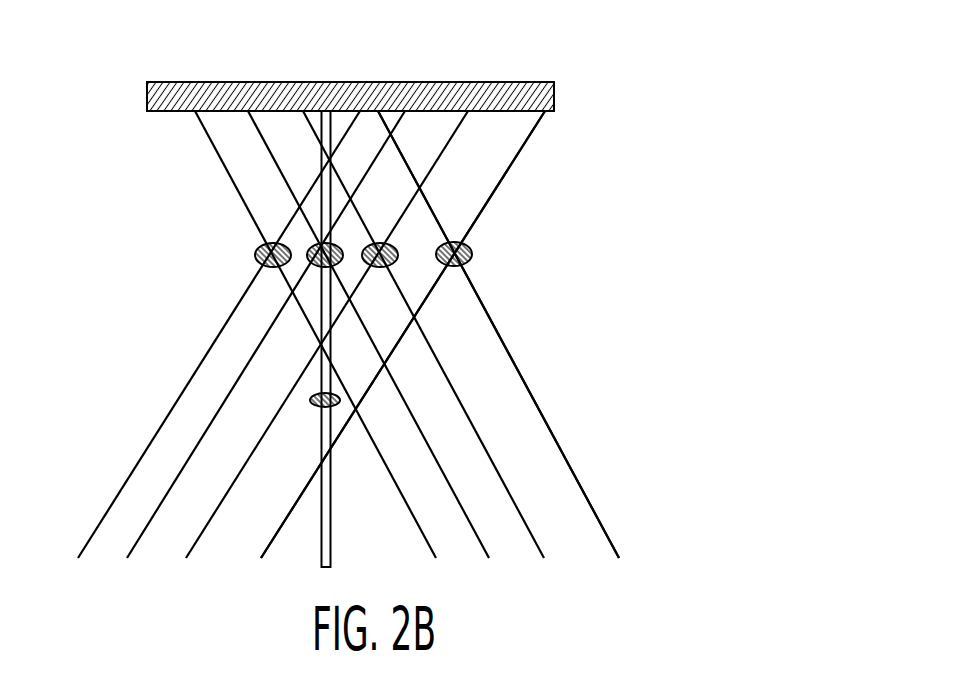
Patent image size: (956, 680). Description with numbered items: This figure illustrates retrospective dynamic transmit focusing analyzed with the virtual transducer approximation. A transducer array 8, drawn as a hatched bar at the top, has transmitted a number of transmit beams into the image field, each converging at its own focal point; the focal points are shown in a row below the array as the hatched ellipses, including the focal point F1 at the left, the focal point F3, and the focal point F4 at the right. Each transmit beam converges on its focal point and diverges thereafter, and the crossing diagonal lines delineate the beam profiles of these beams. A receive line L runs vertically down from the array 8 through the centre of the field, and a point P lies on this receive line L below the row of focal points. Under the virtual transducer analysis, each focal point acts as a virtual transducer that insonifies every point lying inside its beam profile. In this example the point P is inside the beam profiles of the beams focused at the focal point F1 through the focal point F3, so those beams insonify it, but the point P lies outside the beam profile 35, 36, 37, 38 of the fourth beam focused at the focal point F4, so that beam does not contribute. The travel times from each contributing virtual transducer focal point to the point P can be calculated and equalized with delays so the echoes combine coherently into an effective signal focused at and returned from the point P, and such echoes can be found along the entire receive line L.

The transducer array 8 is at (304, 82).
The beam profile line 35 is at (433, 207).
The beam profile line 36 is at (505, 175).
The beam profile line 37 is at (274, 537).
The beam profile line 38 is at (580, 481).
The focal point F1 is at (256, 255).
The focal point F3 is at (396, 252).
The focal point F4 is at (475, 258).
The point P is at (316, 411).
The receive line L is at (333, 525).